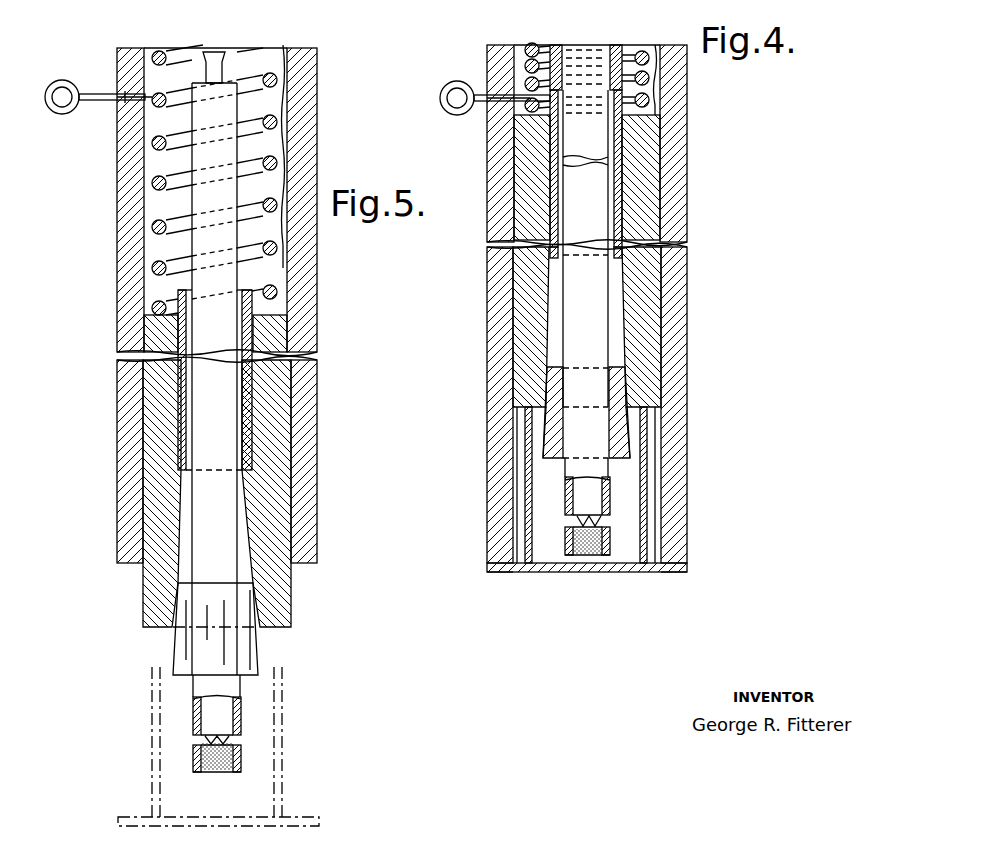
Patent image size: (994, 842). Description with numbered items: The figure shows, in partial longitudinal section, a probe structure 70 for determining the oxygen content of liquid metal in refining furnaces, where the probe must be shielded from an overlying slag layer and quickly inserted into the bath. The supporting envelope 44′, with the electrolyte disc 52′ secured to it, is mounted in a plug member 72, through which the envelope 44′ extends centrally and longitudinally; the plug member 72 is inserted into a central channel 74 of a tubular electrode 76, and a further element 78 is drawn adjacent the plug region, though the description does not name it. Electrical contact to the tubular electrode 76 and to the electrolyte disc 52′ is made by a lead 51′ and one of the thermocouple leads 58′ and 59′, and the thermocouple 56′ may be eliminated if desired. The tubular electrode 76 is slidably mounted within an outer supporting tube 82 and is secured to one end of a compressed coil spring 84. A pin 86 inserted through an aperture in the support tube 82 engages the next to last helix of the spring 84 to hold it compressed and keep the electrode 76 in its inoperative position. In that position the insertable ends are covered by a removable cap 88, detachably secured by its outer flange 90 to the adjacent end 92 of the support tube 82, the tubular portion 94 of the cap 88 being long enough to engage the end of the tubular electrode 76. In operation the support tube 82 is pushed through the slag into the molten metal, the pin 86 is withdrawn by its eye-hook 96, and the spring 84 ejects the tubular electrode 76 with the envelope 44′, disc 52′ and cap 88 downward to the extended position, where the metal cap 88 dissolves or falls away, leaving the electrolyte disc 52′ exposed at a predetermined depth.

In FIG. 5, the supporting envelope 44′ is at (224, 690).
In FIG. 4, the supporting envelope 44′ is at (610, 480).
In FIG. 5, the lead 51′ is at (283, 268).
In FIG. 4, the lead 51′ is at (655, 78).
In FIG. 5, the electrolyte disc 52′ is at (216, 760).
In FIG. 4, the electrolyte disc 52′ is at (590, 545).
In FIG. 5, the thermocouple 56′ is at (201, 742).
In FIG. 4, the thermocouple 56′ is at (606, 524).
In FIG. 5, the thermocouple lead 58′ is at (200, 58).
In FIG. 4, the thermocouple lead 58′ is at (606, 522).
In FIG. 5, the thermocouple lead 59′ is at (238, 60).
In FIG. 4, the thermocouple lead 59′ is at (583, 522).
In FIG. 5, the probe structure 70 is at (318, 394).
In FIG. 4, the probe structure 70 is at (690, 366).
In FIG. 5, the plug member 72 is at (258, 648).
In FIG. 4, the plug member 72 is at (622, 446).
In FIG. 5, the channel 74 is at (247, 520).
In FIG. 4, the channel 74 is at (618, 320).
In FIG. 5, the tubular electrode 76 is at (272, 425).
In FIG. 4, the tubular electrode 76 is at (650, 278).
In FIG. 5, the plunger 78 is at (252, 592).
In FIG. 4, the plunger 78 is at (553, 330).
In FIG. 5, the outer supporting tube 82 is at (300, 457).
In FIG. 4, the outer supporting tube 82 is at (676, 172).
In FIG. 5, the coil spring 84 is at (153, 140).
In FIG. 4, the coil spring 84 is at (535, 47).
In FIG. 5, the pin 86 is at (100, 103).
In FIG. 4, the pin 86 is at (517, 109).
In FIG. 5, the removable cap 88 is at (291, 815).
In FIG. 4, the removable cap 88 is at (549, 576).
In FIG. 4, the outer flange 90 is at (502, 569).
In FIG. 5, the end of support tube 92 is at (130, 562).
In FIG. 4, the end of support tube 92 is at (497, 561).
In FIG. 5, the tubular portion 94 is at (152, 690).
In FIG. 4, the tubular portion 94 is at (526, 463).
In FIG. 5, the eye-hook 96 is at (66, 82).
In FIG. 4, the eye-hook 96 is at (445, 92).